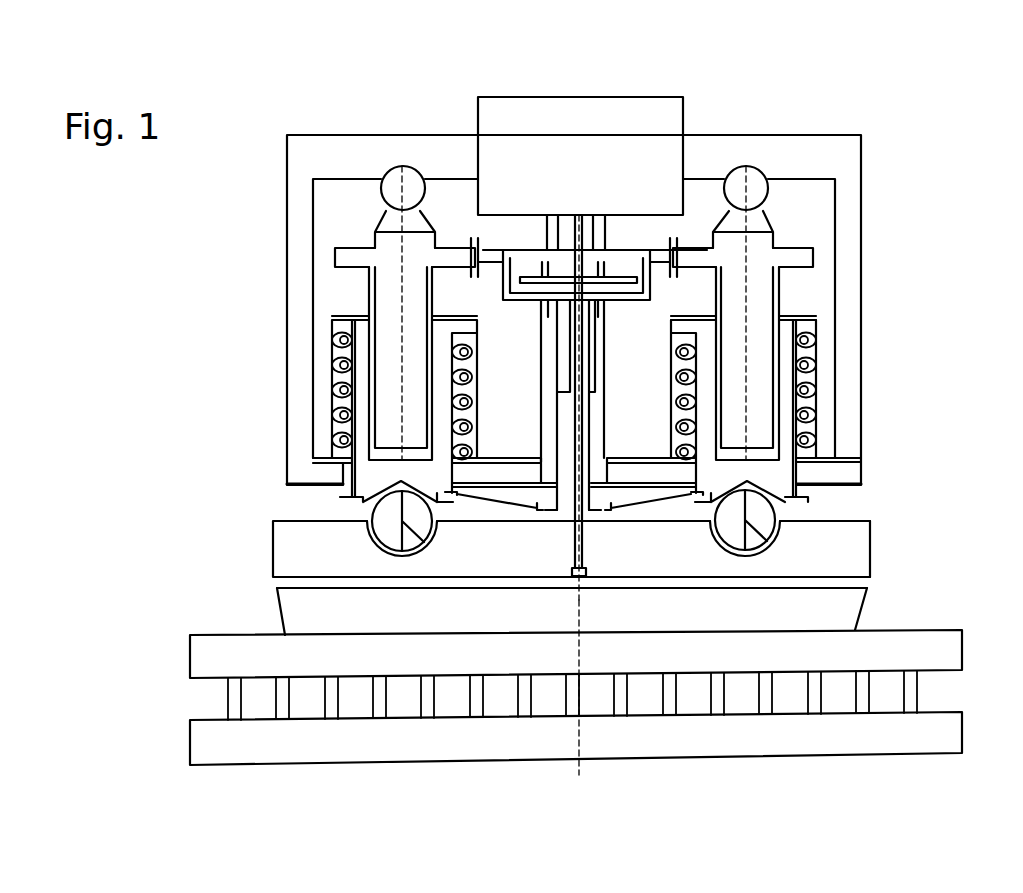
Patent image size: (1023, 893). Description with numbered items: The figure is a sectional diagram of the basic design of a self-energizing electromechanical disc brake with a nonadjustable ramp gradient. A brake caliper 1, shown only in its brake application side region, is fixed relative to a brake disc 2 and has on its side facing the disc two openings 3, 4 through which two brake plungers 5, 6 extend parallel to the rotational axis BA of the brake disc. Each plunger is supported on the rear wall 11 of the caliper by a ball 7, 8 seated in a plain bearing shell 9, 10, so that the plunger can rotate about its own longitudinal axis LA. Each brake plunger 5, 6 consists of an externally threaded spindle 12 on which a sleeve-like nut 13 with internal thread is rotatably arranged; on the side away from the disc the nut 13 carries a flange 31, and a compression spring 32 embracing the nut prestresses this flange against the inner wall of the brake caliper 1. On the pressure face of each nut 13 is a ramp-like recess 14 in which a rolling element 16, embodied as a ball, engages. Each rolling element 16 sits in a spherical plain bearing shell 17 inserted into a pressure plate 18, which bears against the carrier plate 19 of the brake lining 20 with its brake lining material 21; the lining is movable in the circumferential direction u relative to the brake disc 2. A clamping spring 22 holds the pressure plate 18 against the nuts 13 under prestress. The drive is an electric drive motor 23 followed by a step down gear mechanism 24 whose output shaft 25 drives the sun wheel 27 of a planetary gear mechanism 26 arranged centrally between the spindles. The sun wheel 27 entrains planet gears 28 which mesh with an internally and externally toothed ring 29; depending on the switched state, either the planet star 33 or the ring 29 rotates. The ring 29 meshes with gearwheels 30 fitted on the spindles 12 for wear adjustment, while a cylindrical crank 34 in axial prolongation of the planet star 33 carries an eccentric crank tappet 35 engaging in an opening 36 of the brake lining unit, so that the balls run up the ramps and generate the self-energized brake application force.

The brake caliper 1 is at (317, 158).
The brake disc 2 is at (297, 742).
The opening 3 is at (339, 473).
The opening 4 is at (808, 476).
The brake plunger 5 is at (323, 315).
The brake plunger 6 is at (836, 302).
The ball 7 is at (397, 178).
The ball 8 is at (752, 187).
The plain bearing shell 9 is at (421, 162).
The plain bearing shell 10 is at (800, 158).
The rear wall 11 is at (800, 135).
The spindle 12 is at (390, 272).
The nut 13 is at (360, 408).
The ramp-like recess 14 is at (777, 488).
The rolling element 16 is at (375, 503).
The plain bearing shell 17 is at (389, 565).
The pressure plate 18 is at (488, 555).
The carrier plate 19 is at (423, 596).
The brake lining 20 is at (875, 576).
The brake lining material 21 is at (507, 610).
The clamping spring 22 is at (660, 505).
The electric drive motor 23 is at (615, 123).
The step down gear mechanism 24 is at (630, 200).
The output shaft 25 is at (585, 225).
The planetary gear mechanism 26 is at (643, 240).
The sun wheel 27 is at (570, 245).
The planet gear 28 is at (510, 300).
The ring 29 is at (493, 247).
The gearwheel 30 is at (370, 250).
The flange 31 is at (812, 300).
The compression spring 32 is at (812, 368).
The planet star 33 is at (593, 305).
The crank 34 is at (575, 433).
The crank tappet 35 is at (590, 557).
The opening 36 is at (592, 538).
The longitudinal axis LA is at (394, 525).
The brake disc rotational axis BA is at (565, 705).
The circumferential direction u is at (665, 770).